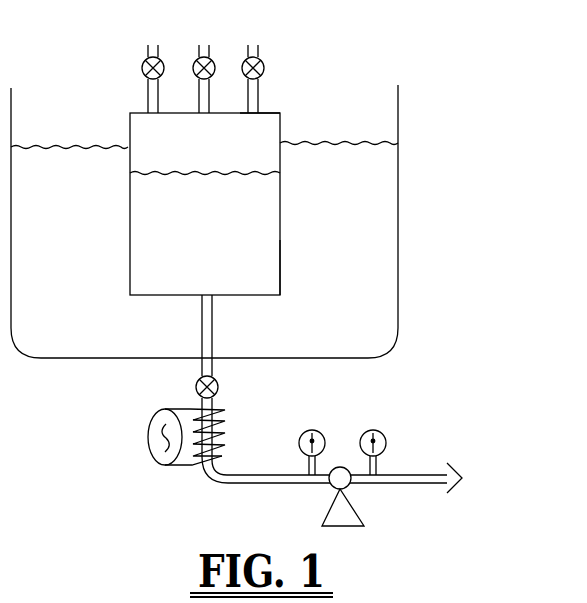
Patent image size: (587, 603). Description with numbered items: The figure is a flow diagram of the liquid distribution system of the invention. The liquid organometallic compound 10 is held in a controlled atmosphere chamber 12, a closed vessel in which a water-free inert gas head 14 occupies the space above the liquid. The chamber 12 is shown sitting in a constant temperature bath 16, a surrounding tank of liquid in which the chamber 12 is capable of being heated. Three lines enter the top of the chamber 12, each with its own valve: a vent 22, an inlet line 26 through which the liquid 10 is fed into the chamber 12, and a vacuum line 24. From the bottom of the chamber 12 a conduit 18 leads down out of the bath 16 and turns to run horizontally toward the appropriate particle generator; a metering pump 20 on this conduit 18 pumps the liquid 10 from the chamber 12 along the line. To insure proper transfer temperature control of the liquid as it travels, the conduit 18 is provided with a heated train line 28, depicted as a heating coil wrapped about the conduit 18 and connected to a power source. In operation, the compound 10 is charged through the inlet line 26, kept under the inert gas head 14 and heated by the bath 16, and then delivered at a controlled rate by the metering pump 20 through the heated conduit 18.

The liquid organometallic compound 10 is at (242, 224).
The controlled atmosphere chamber 12 is at (282, 266).
The water-free inert gas head 14 is at (283, 128).
The constant temperature bath 16 is at (373, 168).
The conduit 18 is at (232, 468).
The metering pump 20 is at (351, 508).
The vent 22 is at (152, 92).
The vacuum line 24 is at (254, 92).
The inlet line 26 is at (203, 47).
The heated train line 28 is at (141, 433).